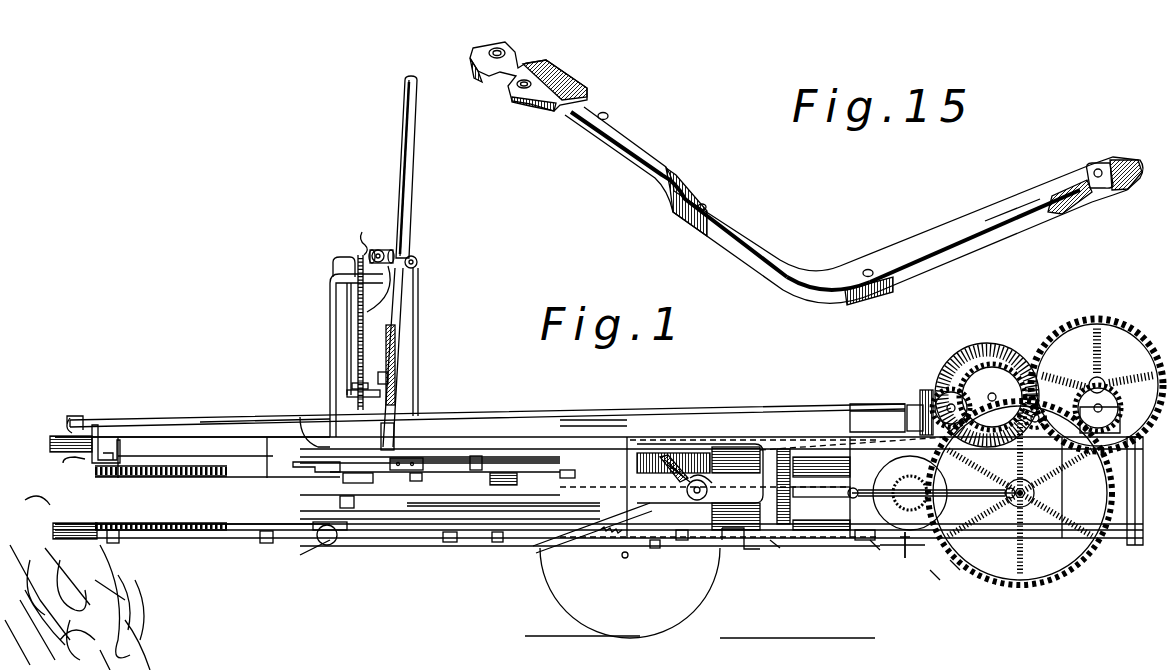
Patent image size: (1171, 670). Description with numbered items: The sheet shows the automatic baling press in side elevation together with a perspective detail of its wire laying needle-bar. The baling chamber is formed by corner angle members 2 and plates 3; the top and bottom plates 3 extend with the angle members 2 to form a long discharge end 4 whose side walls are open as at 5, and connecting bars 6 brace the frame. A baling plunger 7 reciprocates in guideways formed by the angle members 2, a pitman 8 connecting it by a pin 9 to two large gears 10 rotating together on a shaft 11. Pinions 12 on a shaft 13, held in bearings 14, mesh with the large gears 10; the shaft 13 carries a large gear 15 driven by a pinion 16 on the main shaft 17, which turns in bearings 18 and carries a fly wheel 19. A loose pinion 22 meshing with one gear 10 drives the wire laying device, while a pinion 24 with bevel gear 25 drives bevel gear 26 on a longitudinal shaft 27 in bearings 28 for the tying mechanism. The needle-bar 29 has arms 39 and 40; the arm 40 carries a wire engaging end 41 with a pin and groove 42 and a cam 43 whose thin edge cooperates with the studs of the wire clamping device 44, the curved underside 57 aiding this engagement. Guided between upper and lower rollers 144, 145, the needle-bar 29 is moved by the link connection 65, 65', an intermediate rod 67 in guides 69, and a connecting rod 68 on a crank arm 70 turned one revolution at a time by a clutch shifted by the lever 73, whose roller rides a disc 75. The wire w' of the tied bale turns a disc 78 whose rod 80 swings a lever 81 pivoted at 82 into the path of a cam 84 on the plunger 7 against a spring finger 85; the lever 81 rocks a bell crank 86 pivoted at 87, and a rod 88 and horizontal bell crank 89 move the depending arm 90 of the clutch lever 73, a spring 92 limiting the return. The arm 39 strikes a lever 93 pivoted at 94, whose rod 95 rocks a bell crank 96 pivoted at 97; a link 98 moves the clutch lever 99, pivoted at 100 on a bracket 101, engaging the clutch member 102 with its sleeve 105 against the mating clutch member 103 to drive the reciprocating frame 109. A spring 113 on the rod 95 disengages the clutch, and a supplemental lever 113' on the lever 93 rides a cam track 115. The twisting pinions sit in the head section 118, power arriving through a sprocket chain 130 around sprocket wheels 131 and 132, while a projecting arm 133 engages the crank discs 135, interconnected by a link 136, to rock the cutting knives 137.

In FIG. 1, the corner angle members 2 is at (203, 447).
In FIG. 1, the plates 3 is at (662, 450).
In FIG. 1, the discharge end 4 is at (120, 498).
In FIG. 1, the open side walls 5 is at (153, 455).
In FIG. 1, the connecting bars 6 is at (632, 462).
In FIG. 1, the baling plunger 7 is at (752, 462).
In FIG. 1, the pitman 8 is at (895, 455).
In FIG. 1, the pin 9 is at (1030, 460).
In FIG. 1, the large gears 10 is at (1005, 588).
In FIG. 1, the shaft 11 is at (1040, 494).
In FIG. 1, the pinions 12 is at (1098, 402).
In FIG. 1, the shaft 13 is at (1102, 392).
In FIG. 1, the bearings 14 is at (1113, 433).
In FIG. 1, the large gear 15 is at (1135, 345).
In FIG. 1, the pinion 16 is at (1044, 385).
In FIG. 1, the driving or main shaft 17 is at (1035, 412).
In FIG. 1, the bearings 18 is at (990, 392).
In FIG. 1, the fly wheel 19 is at (965, 355).
In FIG. 1, the pinion 22 is at (821, 481).
In FIG. 1, the pinion 24 is at (945, 392).
In FIG. 1, the bevel gear 25 is at (958, 362).
In FIG. 1, the bevel gear 26 is at (927, 405).
In FIG. 1, the shaft 27 is at (742, 440).
In FIG. 1, the bearings 28 is at (903, 405).
In FIG. 15, the needle-bar 29 is at (753, 233).
In FIG. 1, the needle-bar 29 is at (497, 432).
In FIG. 15, the arm 39 is at (658, 150).
In FIG. 1, the arm 39 is at (442, 432).
In FIG. 15, the arm 40 is at (943, 240).
In FIG. 15, the wire engaging end 41 is at (1113, 160).
In FIG. 15, the pin and groove 42 is at (1093, 185).
In FIG. 15, the cam or beveled surface 43 is at (1067, 207).
In FIG. 1, the wire clamping or securing device 44 is at (458, 425).
In FIG. 15, the curved underside of needle bar 57 is at (985, 232).
In FIG. 1, the link or rod connection 65 is at (487, 389).
In FIG. 1, the pawl 65' is at (305, 418).
In FIG. 1, the intermediate connecting rod 67 is at (775, 548).
In FIG. 1, the connecting rod or link 68 is at (870, 540).
In FIG. 1, the guides 69 is at (800, 447).
In FIG. 1, the crank arm 70 is at (941, 486).
In FIG. 1, the clutch lever 73 is at (935, 580).
In FIG. 1, the disc 75 is at (955, 565).
In FIG. 1, the revoluble disc 78 is at (313, 547).
In FIG. 1, the rod 80 is at (565, 548).
In FIG. 1, the lever 81 is at (653, 547).
In FIG. 1, the pivot 82 is at (620, 560).
In FIG. 1, the cam 84 is at (843, 517).
In FIG. 1, the spring finger 85 is at (683, 540).
In FIG. 1, the bell crank lever 86 is at (752, 565).
In FIG. 1, the pivot 87 is at (727, 565).
In FIG. 1, the rod 88 is at (873, 563).
In FIG. 1, the horizontally disposed bell crank lever 89 is at (874, 560).
In FIG. 1, the depending arm 90 is at (905, 550).
In FIG. 1, the spring 92 is at (660, 453).
In FIG. 1, the lever 93 is at (108, 432).
In FIG. 1, the pivot 94 is at (70, 416).
In FIG. 1, the rod 95 is at (227, 420).
In FIG. 1, the bell crank lever 96 is at (356, 388).
In FIG. 1, the pivotal support 97 is at (390, 380).
In FIG. 1, the link or rod 98 is at (345, 300).
In FIG. 1, the clutch lever 99 is at (333, 274).
In FIG. 1, the pivot 100 is at (418, 272).
In FIG. 1, the bracket 101 is at (345, 262).
In FIG. 1, the clutch member 102 is at (462, 196).
In FIG. 1, the mating clutch member 103 is at (372, 252).
In FIG. 1, the sleeve 105 is at (385, 257).
In FIG. 1, the reciprocally mounted frame 109 is at (400, 155).
In FIG. 1, the spring 113 is at (161, 492).
In FIG. 1, the supplemental lever 113' is at (161, 427).
In FIG. 1, the cam or elevating track 115 is at (70, 460).
In FIG. 1, the head section 118 is at (403, 378).
In FIG. 1, the sprocket chain 130 is at (355, 320).
In FIG. 1, the sprocket wheel 131 is at (366, 246).
In FIG. 1, the sprocket wheel 132 is at (352, 400).
In FIG. 1, the projecting arm 133 is at (395, 298).
In FIG. 1, the crank discs 135 is at (367, 478).
In FIG. 1, the link 136 is at (345, 503).
In FIG. 1, the cutting knife 137 is at (418, 478).
In FIG. 1, the upper rollers 144 is at (555, 430).
In FIG. 1, the lower rollers 145 is at (560, 450).
In FIG. 1, the wire w' is at (284, 488).